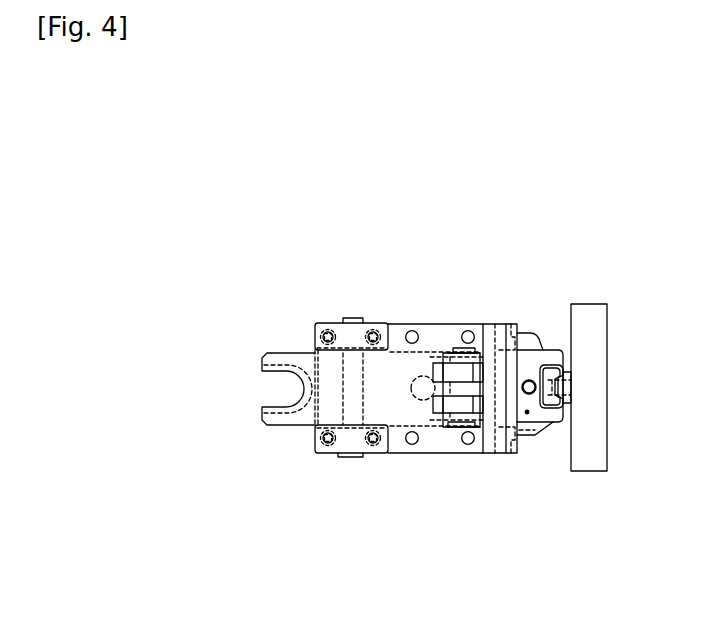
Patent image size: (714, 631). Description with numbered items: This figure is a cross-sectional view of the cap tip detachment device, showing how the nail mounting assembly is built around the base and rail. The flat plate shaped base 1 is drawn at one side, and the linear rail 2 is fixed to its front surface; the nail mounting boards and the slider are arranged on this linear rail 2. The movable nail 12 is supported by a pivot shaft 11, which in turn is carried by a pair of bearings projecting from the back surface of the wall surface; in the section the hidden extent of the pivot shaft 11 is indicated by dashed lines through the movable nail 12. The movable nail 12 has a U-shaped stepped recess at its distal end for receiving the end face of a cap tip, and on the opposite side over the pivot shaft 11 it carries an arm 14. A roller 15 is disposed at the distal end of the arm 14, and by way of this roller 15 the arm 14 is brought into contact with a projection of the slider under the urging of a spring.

The base 1 is at (593, 310).
The linear rail 2 is at (550, 367).
The pivot shaft 11 is at (350, 457).
The movable nail 12 is at (303, 360).
The arm 14 is at (393, 368).
The roller 15 is at (460, 372).